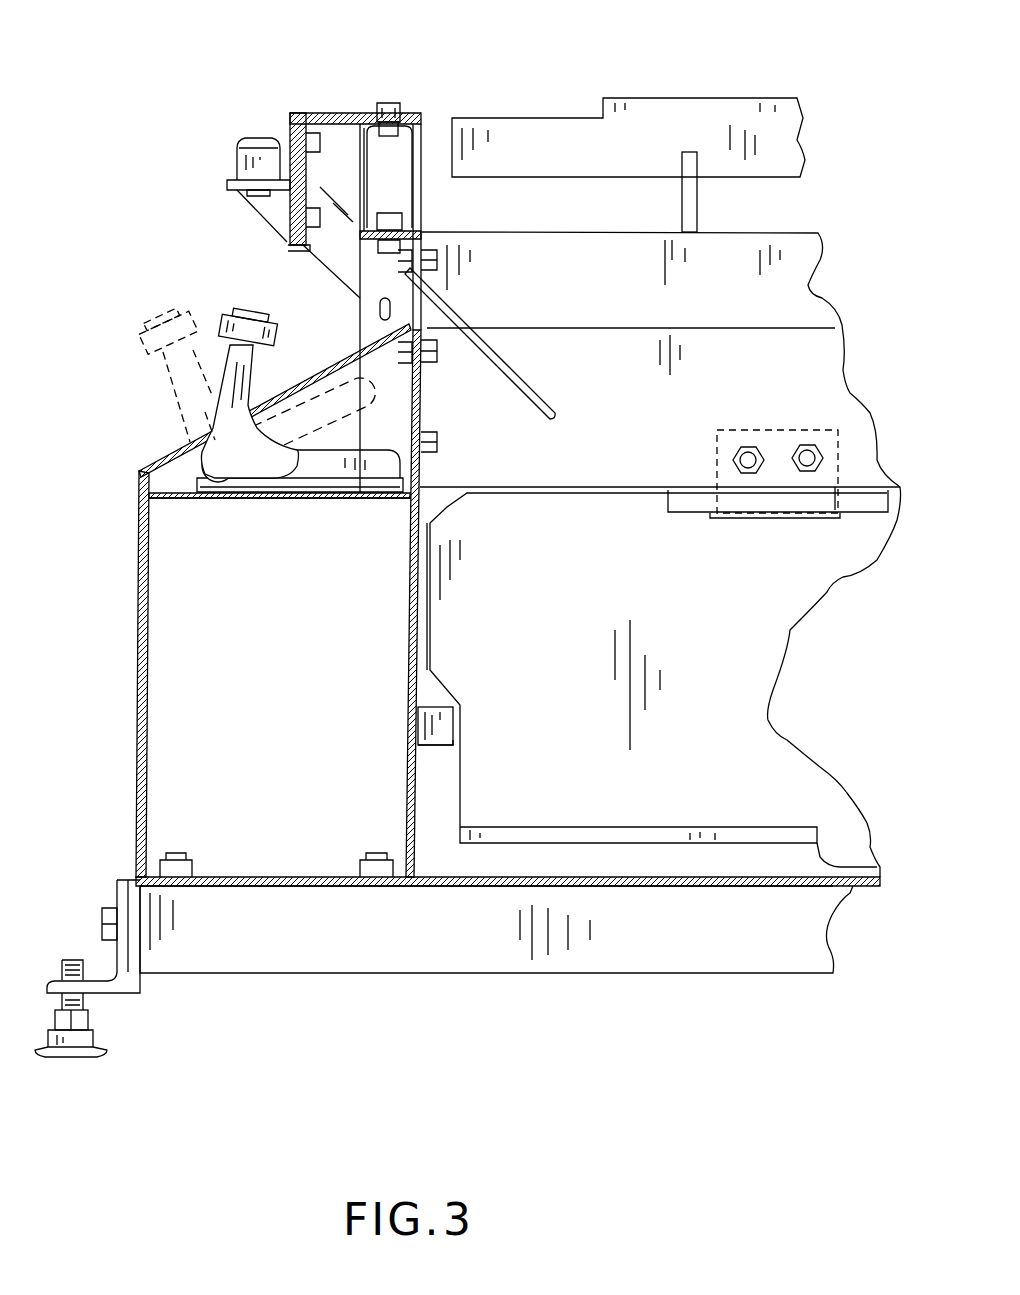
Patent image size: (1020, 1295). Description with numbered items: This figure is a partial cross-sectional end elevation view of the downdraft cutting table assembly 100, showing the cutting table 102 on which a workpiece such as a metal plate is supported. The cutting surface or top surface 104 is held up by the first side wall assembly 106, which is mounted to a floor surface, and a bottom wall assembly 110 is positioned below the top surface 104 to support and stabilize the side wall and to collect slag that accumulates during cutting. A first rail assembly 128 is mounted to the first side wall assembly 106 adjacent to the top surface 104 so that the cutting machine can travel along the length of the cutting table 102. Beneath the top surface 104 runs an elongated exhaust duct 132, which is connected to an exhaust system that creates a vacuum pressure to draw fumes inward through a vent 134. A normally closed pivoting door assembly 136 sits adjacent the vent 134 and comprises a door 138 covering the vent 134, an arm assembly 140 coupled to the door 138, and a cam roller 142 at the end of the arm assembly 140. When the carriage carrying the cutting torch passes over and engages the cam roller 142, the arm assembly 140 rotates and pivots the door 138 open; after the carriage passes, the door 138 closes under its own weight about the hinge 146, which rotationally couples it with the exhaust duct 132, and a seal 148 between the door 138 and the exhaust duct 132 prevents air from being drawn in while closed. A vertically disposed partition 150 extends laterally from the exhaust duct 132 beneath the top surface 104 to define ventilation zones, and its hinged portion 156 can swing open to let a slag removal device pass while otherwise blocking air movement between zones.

The downdraft cutting table assembly 100 is at (182, 217).
The cutting table 102 is at (137, 830).
The cutting surface (top surface) 104 is at (677, 97).
The first side wall assembly 106 is at (140, 657).
The bottom wall assembly 110 is at (648, 892).
The first rail assembly 128 is at (260, 133).
The exhaust duct 132 is at (173, 593).
The vent 134 is at (300, 498).
The pivoting door assembly 136 is at (218, 312).
The door 138 is at (370, 465).
The arm assembly 140 is at (332, 455).
The cam roller 142 is at (248, 313).
The hinge 146 is at (193, 442).
The seal 148 is at (267, 495).
The partition 150 is at (697, 402).
The hinged portion 156 is at (725, 805).